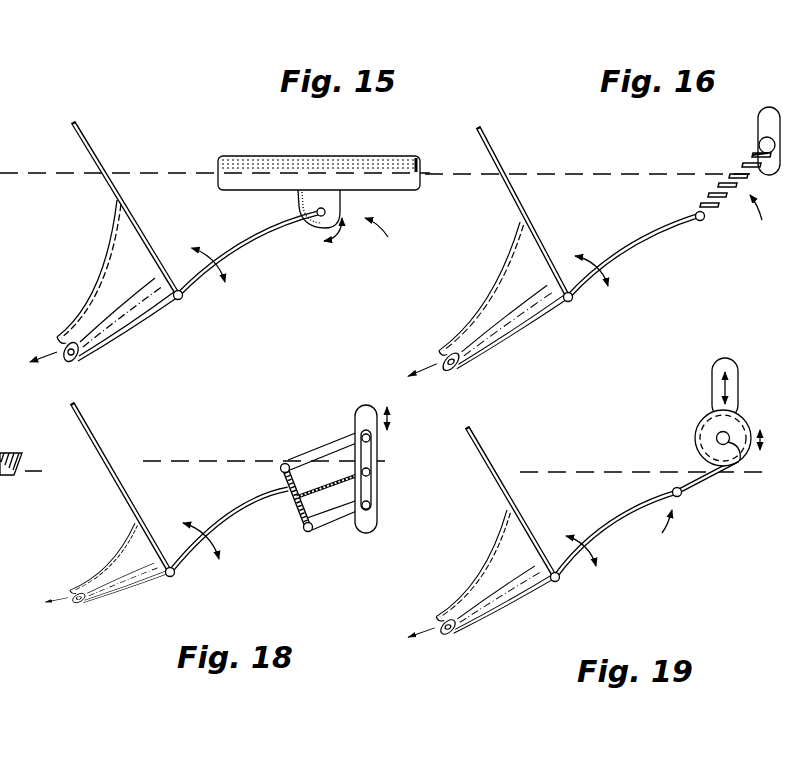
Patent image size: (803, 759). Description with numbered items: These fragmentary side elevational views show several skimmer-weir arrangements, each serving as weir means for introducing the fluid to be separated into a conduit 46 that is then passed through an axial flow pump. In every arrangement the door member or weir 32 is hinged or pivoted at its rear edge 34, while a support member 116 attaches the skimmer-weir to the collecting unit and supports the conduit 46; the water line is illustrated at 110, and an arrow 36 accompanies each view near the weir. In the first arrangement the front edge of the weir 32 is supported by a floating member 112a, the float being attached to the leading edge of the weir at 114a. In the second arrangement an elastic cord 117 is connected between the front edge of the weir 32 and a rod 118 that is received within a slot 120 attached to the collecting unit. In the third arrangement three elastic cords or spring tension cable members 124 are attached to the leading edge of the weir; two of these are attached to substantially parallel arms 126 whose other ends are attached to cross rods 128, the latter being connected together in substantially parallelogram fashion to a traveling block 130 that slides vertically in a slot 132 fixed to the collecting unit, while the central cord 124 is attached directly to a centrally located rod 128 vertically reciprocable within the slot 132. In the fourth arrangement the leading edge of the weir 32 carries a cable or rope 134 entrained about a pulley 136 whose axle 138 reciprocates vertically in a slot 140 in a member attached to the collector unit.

In FIG. 15, the door member or weir 32 is at (248, 244).
In FIG. 16, the door member or weir 32 is at (634, 239).
In FIG. 18, the door member or weir 32 is at (208, 548).
In FIG. 19, the door member or weir 32 is at (607, 525).
In FIG. 15, the rear edge hinge 34 is at (181, 299).
In FIG. 16, the rear edge hinge 34 is at (572, 303).
In FIG. 18, the rear edge hinge 34 is at (171, 580).
In FIG. 19, the rear edge hinge 34 is at (562, 583).
In FIG. 15, the direction arrow 36 is at (390, 237).
In FIG. 16, the direction arrow 36 is at (763, 220).
In FIG. 19, the direction arrow 36 is at (666, 532).
In FIG. 15, the conduit 46 is at (130, 340).
In FIG. 16, the conduit 46 is at (532, 342).
In FIG. 18, the conduit 46 is at (128, 601).
In FIG. 19, the conduit 46 is at (508, 616).
In FIG. 15, the water line 110 is at (145, 170).
In FIG. 16, the water line 110 is at (641, 173).
In FIG. 18, the water line 110 is at (190, 462).
In FIG. 19, the water line 110 is at (553, 470).
In FIG. 15, the floating member 112a is at (380, 156).
In FIG. 15, the float attachment point 114a is at (316, 228).
In FIG. 15, the support member 116 is at (110, 183).
In FIG. 16, the support member 116 is at (510, 202).
In FIG. 18, the support member 116 is at (115, 493).
In FIG. 19, the support member 116 is at (497, 482).
In FIG. 16, the elastic cord 117 is at (725, 208).
In FIG. 16, the rod 118 is at (760, 137).
In FIG. 16, the slot 120 is at (762, 108).
In FIG. 18, the elastic cords or spring tension cable members 124 is at (284, 480).
In FIG. 18, the substantially parallel arms 126 is at (322, 447).
In FIG. 18, the cross rods 128 is at (378, 440).
In FIG. 18, the traveling block 130 is at (375, 452).
In FIG. 18, the slot 132 is at (359, 404).
In FIG. 19, the cable or rope 134 is at (683, 496).
In FIG. 19, the pulley 136 is at (703, 438).
In FIG. 19, the axle 138 is at (740, 462).
In FIG. 19, the slot 140 is at (739, 366).